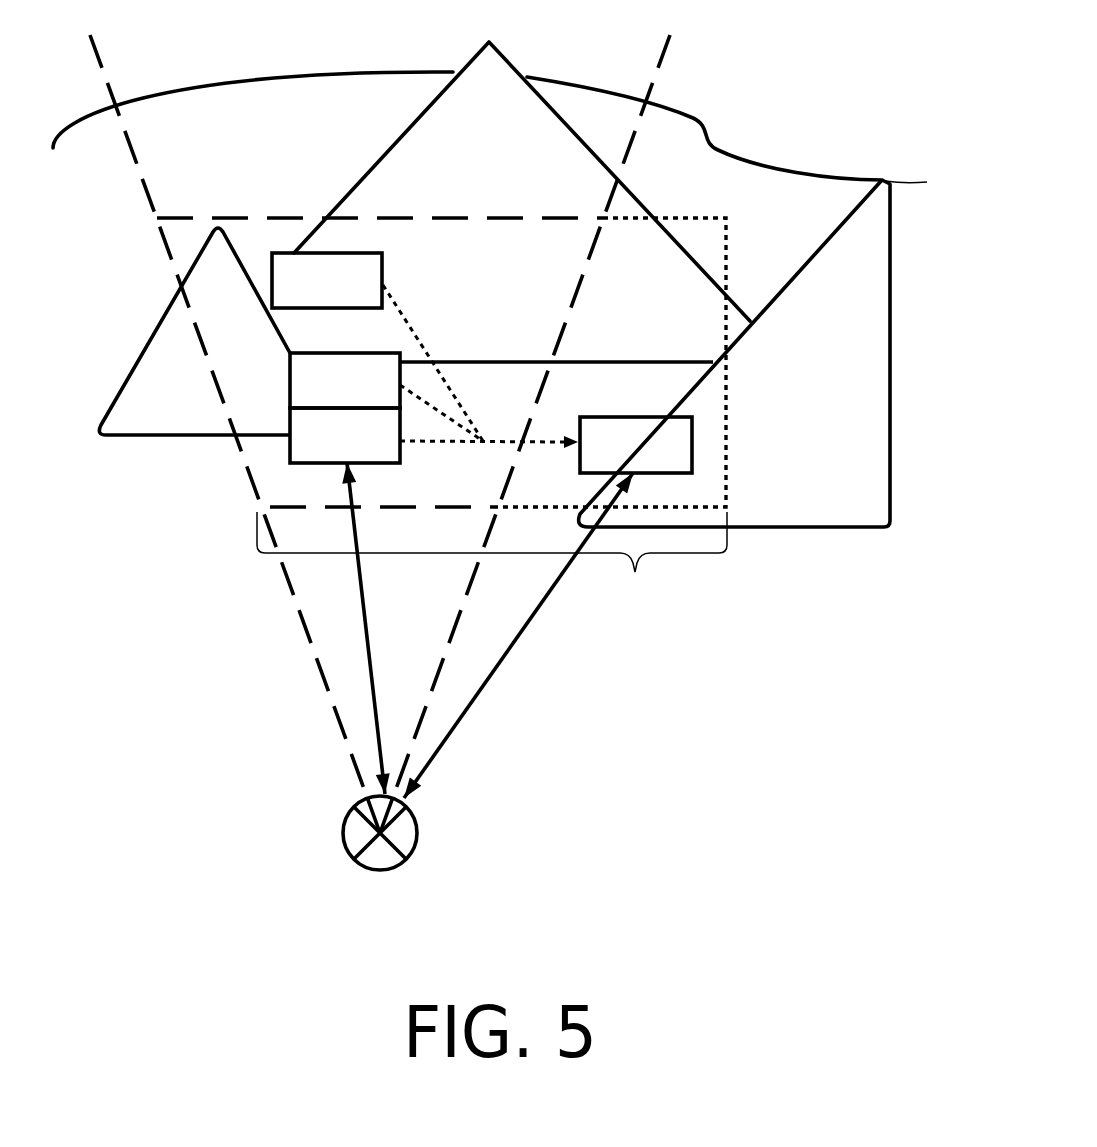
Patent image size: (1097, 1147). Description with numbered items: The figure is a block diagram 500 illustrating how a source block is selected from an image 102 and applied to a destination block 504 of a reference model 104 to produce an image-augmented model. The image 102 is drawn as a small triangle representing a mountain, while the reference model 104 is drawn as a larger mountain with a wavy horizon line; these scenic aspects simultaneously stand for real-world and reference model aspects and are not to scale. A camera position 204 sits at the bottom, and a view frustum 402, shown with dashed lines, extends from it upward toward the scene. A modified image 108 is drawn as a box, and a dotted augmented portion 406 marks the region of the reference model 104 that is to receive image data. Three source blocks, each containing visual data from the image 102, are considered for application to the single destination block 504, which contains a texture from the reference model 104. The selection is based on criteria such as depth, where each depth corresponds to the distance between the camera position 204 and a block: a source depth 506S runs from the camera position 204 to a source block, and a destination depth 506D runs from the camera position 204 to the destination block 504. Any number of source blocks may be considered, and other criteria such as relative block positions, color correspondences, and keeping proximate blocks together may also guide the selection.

The reference model 104 is at (435, 163).
The augmented portion 406 is at (652, 296).
The image 102 is at (272, 473).
The modified image 108 is at (652, 604).
The view frustum 402 is at (323, 673).
The destination block 504 is at (656, 457).
The source depth 506S is at (363, 603).
The destination depth 506D is at (512, 650).
The camera position 204 is at (382, 851).
The block diagram 500 is at (707, 903).